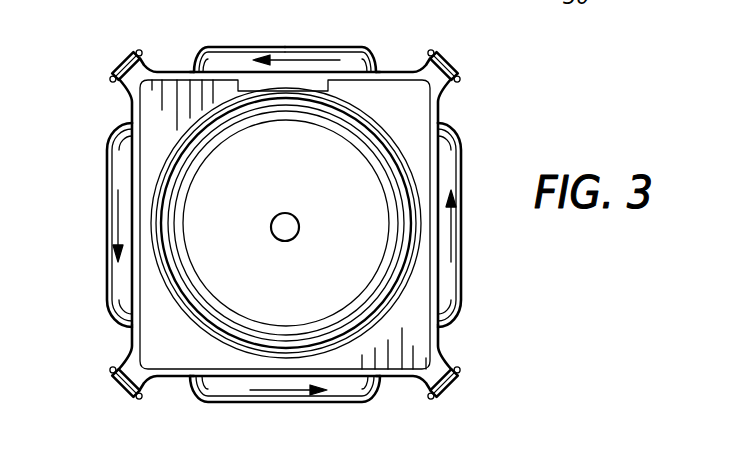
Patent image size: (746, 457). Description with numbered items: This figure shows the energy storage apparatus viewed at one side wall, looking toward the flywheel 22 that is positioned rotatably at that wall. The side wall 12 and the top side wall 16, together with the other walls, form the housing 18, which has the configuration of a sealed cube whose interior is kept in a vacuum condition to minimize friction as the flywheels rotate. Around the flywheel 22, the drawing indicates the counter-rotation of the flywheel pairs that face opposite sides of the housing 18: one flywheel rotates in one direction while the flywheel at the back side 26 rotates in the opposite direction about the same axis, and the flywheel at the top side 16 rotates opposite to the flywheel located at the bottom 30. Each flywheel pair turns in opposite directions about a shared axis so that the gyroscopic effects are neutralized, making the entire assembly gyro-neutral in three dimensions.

The side wall 12 is at (443, 137).
The side wall 16 is at (373, 63).
The housing 18 is at (196, 66).
The flywheel 22 is at (237, 309).
The back side 26 is at (120, 307).
The bottom 30 is at (366, 398).